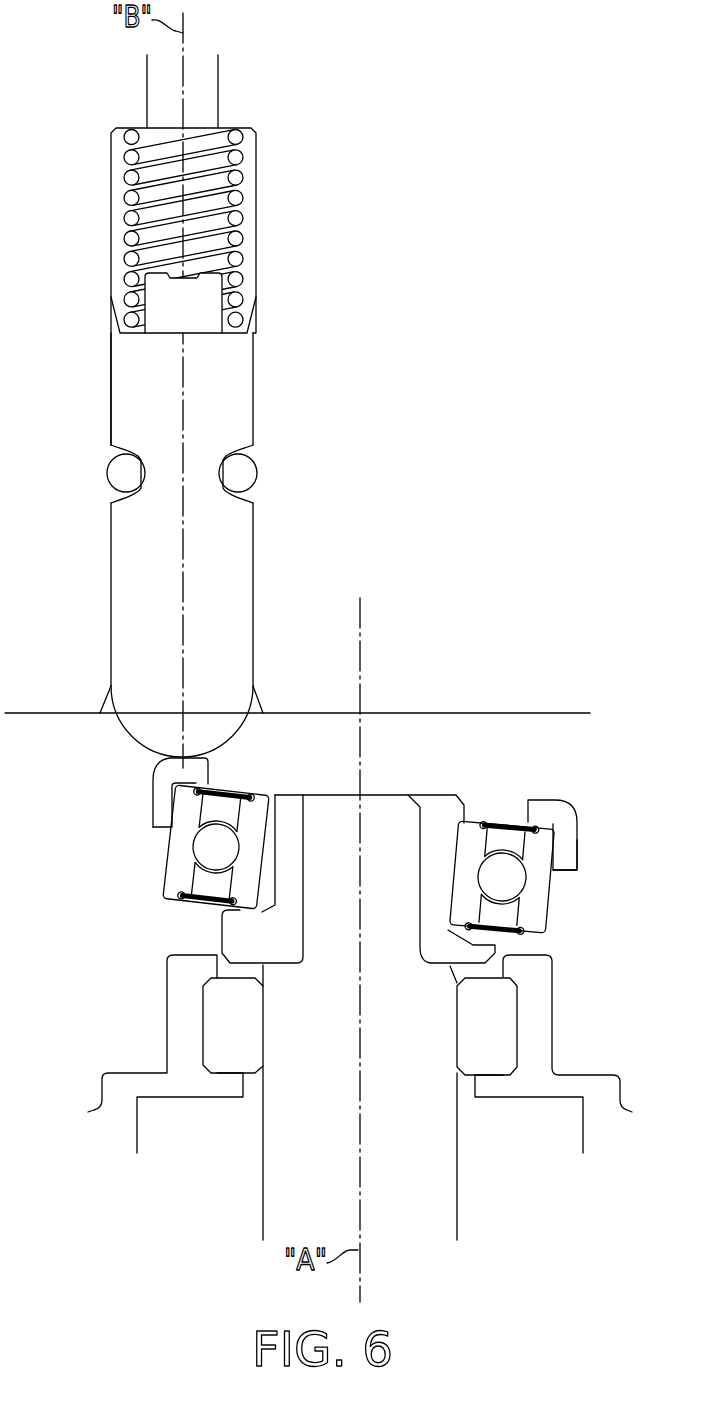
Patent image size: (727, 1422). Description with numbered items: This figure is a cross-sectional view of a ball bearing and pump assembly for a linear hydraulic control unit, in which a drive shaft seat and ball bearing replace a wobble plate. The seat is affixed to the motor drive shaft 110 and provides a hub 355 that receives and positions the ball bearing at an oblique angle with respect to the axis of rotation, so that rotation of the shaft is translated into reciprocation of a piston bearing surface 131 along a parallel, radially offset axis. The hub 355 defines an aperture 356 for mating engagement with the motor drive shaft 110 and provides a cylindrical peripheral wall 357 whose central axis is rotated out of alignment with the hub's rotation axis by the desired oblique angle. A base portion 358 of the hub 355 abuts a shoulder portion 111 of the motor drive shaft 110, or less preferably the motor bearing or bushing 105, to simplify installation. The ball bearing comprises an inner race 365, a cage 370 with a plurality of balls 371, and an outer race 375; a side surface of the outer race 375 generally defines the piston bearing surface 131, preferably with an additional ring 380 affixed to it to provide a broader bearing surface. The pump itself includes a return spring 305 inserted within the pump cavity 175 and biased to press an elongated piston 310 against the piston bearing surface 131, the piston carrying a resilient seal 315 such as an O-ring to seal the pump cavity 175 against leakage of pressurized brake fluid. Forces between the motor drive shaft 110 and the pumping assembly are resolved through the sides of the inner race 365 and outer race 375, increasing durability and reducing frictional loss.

The pump cavity 175 is at (247, 173).
The return spring 305 is at (240, 233).
The elongated piston 310 is at (233, 378).
The resilient seal 315 is at (240, 465).
The aperture 356 is at (306, 803).
The hub 355 is at (435, 803).
The cylindrical peripheral wall 357 is at (460, 828).
The piston bearing surface 131 is at (553, 804).
The additional ring 380 is at (567, 853).
The base portion 358 is at (507, 950).
The outer race 375 is at (163, 834).
The balls 371 is at (203, 848).
The cage 370 is at (185, 907).
The inner race 365 is at (248, 880).
The motor bearing or bushing 105 is at (222, 1027).
The shoulder portion 111 is at (450, 972).
The motor drive shaft 110 is at (447, 1137).